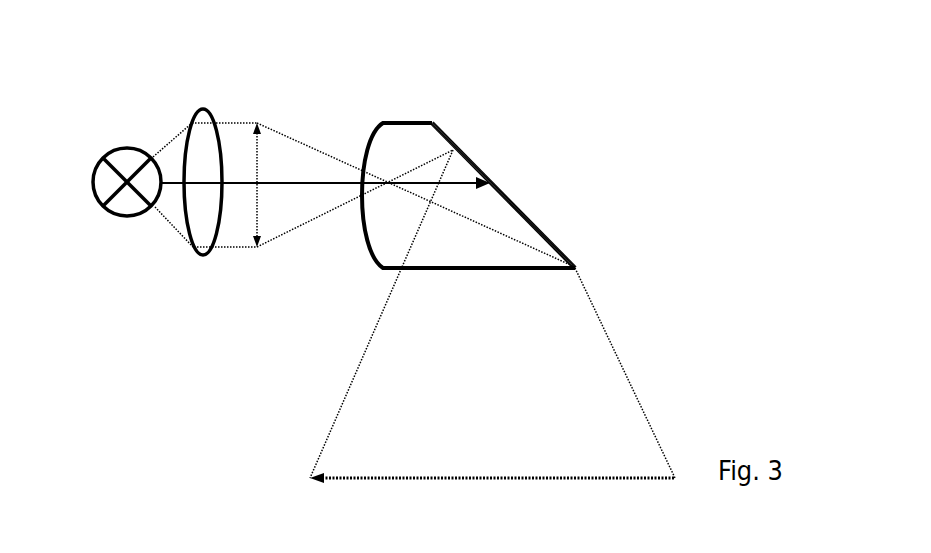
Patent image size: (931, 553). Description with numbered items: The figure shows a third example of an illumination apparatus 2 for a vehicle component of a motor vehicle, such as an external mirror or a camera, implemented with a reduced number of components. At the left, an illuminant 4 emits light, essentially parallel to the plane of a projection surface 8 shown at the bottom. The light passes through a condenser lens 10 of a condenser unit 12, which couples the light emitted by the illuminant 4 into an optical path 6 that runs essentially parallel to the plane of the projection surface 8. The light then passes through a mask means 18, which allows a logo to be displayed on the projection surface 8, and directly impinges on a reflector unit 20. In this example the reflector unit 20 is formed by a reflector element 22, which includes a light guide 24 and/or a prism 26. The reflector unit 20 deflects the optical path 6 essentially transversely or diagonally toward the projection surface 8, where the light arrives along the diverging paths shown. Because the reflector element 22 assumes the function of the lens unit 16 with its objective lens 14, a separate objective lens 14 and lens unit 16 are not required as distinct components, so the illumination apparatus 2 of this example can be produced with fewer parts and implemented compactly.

The illumination apparatus 2 is at (139, 88).
The illuminant 4 is at (93, 182).
The optical path 6 is at (285, 182).
The projection surface 8 is at (565, 478).
The condenser lens 10 is at (210, 110).
The condenser unit 12 is at (180, 271).
The objective lens 14 is at (410, 124).
The lens unit 16 is at (558, 122).
The mask means 18 is at (258, 195).
The reflector unit 20 is at (537, 228).
The reflector element 22 is at (593, 195).
The light guide 24 is at (615, 195).
The prism 26 is at (635, 194).